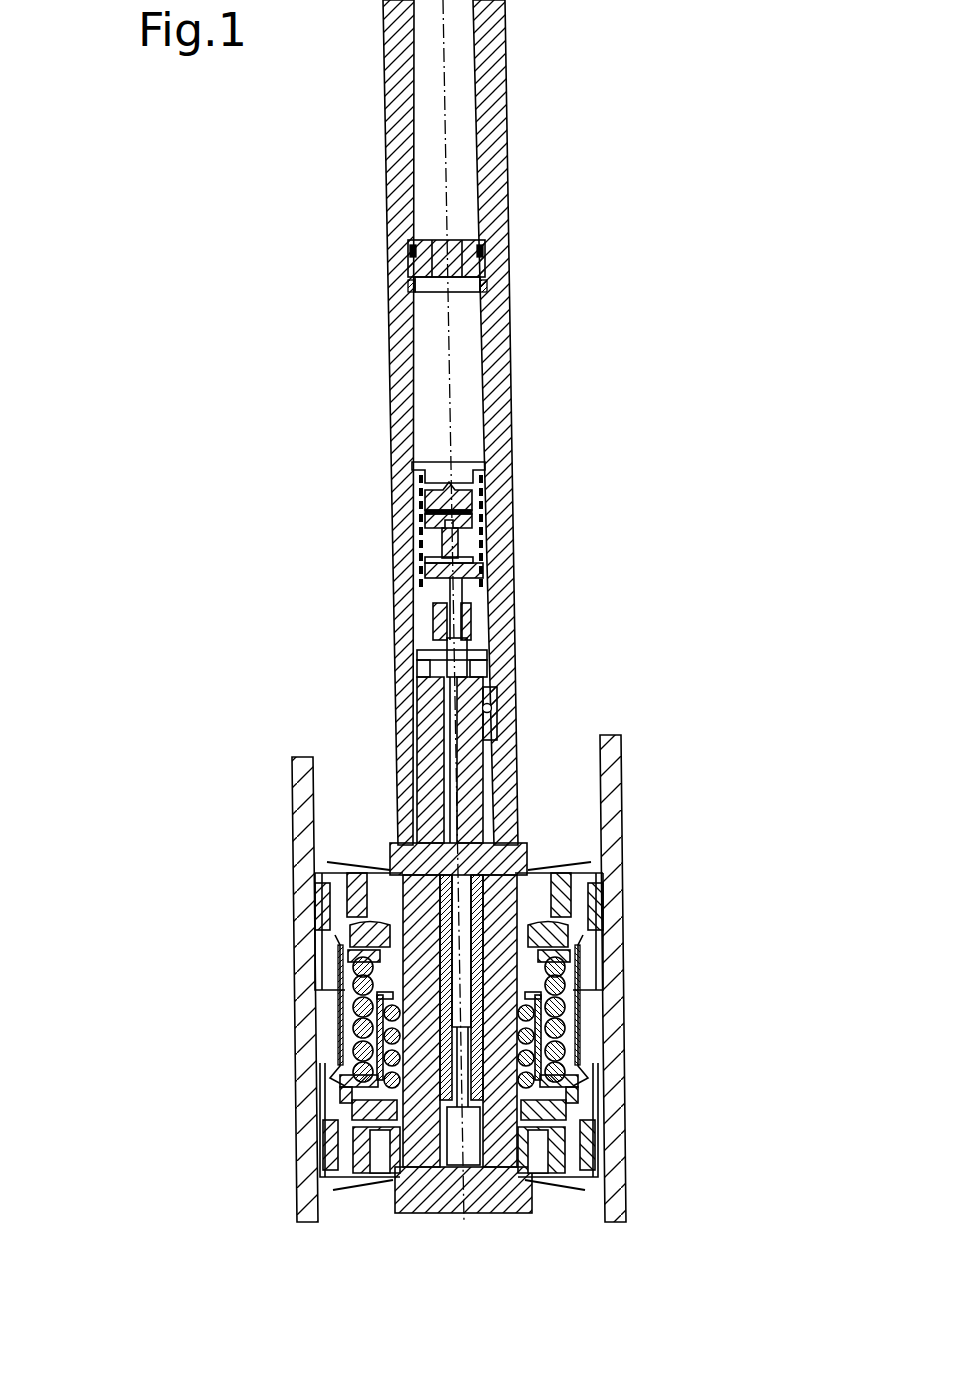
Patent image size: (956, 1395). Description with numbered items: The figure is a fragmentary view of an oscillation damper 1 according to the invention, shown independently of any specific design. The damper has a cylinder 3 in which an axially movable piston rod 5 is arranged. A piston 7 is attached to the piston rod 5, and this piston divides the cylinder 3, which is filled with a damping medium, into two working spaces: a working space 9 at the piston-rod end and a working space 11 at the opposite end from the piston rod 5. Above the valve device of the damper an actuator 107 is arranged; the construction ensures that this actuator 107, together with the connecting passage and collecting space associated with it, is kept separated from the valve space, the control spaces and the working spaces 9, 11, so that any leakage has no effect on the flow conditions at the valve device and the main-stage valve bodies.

The oscillation damper 1 is at (167, 1112).
The cylinder 3 is at (300, 833).
The piston rod 5 is at (510, 497).
The piston 7 is at (563, 758).
The working space 9 is at (366, 790).
The working space 11 is at (362, 1229).
The actuator 107 is at (482, 368).